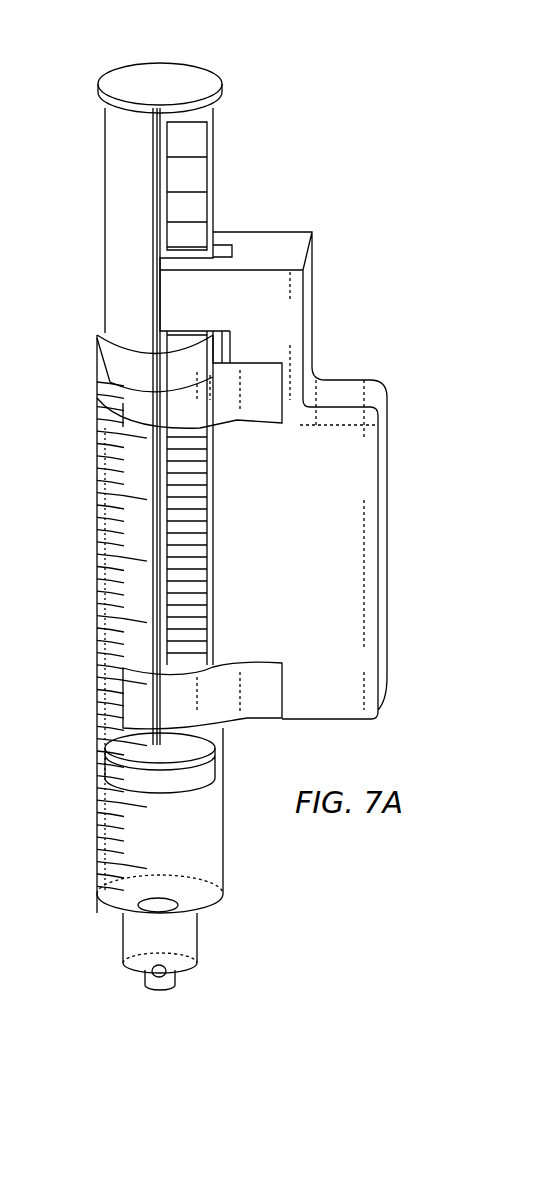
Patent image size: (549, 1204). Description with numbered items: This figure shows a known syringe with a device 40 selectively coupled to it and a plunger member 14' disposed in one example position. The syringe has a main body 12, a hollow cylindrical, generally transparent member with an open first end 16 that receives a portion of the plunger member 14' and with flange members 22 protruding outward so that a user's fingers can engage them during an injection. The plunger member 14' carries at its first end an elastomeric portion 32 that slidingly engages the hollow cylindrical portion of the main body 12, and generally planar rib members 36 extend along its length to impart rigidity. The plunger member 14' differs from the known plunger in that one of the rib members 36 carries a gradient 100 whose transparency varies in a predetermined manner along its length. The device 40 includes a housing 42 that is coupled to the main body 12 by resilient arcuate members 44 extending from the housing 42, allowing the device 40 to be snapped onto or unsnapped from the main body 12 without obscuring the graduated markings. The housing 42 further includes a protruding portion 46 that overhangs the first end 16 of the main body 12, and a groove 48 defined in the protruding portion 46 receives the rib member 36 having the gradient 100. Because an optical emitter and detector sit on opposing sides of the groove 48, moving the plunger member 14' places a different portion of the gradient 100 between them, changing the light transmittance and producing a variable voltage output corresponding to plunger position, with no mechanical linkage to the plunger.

The main body 12 is at (197, 833).
The plunger member 14' is at (136, 220).
The first end 16 is at (135, 322).
The flange members 22 is at (120, 363).
The elastomeric portion 32 is at (205, 768).
The rib members 36 is at (207, 111).
The device 40 is at (350, 332).
The housing 42 is at (357, 480).
The resilient arcuate members 44 is at (162, 417).
The protruding portion 46 is at (177, 292).
The groove 48 is at (223, 250).
The gradient 100 is at (198, 177).